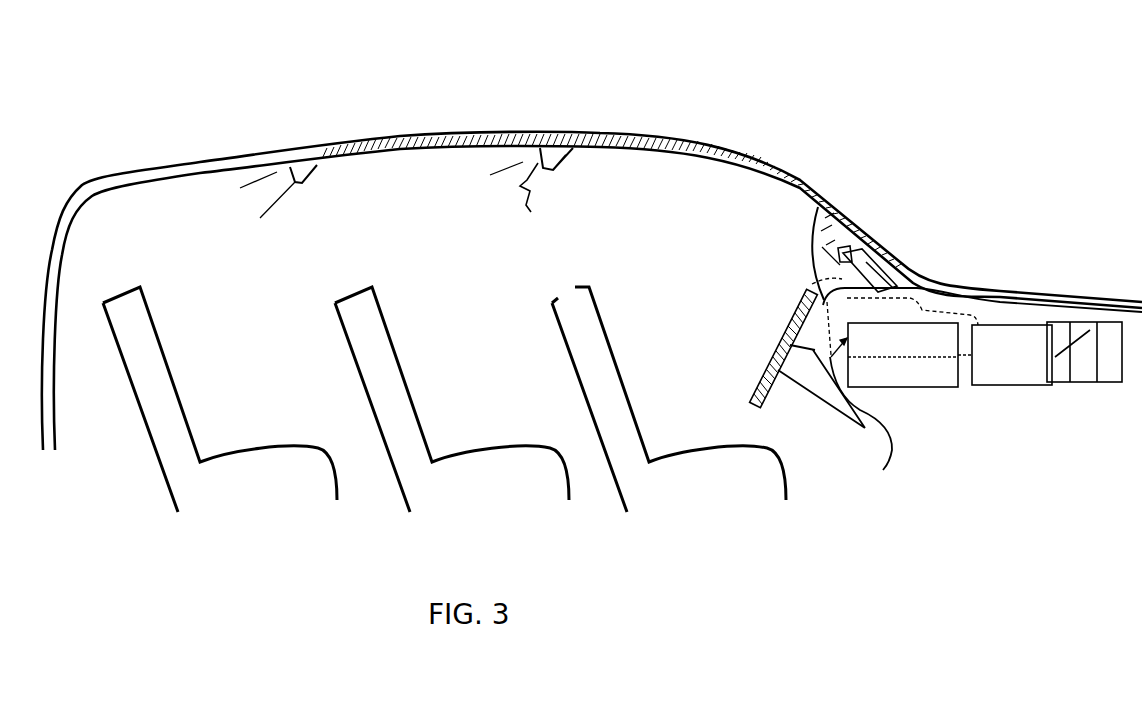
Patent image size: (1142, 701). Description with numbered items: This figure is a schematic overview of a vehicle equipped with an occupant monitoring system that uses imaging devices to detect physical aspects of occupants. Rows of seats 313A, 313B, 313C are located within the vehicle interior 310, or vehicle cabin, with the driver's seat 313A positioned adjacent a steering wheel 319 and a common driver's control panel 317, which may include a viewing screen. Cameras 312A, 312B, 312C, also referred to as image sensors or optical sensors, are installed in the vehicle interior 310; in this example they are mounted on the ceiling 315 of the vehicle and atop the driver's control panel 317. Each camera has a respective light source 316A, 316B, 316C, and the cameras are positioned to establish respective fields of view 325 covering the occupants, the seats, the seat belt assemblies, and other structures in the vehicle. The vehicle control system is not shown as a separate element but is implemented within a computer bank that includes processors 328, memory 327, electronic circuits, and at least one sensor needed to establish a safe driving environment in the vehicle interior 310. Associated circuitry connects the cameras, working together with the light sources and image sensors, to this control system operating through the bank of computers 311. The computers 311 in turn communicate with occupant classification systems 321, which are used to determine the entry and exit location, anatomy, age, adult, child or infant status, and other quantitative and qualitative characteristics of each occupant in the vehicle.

The vehicle interior 310 is at (750, 90).
The computers 311 is at (1097, 380).
The camera 312A is at (843, 255).
The camera 312B is at (562, 171).
The camera 312C is at (312, 183).
The driver's seat 313A is at (595, 332).
The seat 313B is at (388, 330).
The seat 313C is at (147, 333).
The ceiling 315 is at (670, 153).
The light source 316A is at (863, 253).
The light source 316B is at (535, 162).
The light source 316C is at (280, 178).
The driver's control panel 317 is at (818, 207).
The steering wheel 319 is at (802, 297).
The occupant classification systems 321 is at (1020, 386).
The fields of view 325 is at (531, 212).
The memory 327 is at (900, 387).
The processors 328 is at (885, 470).